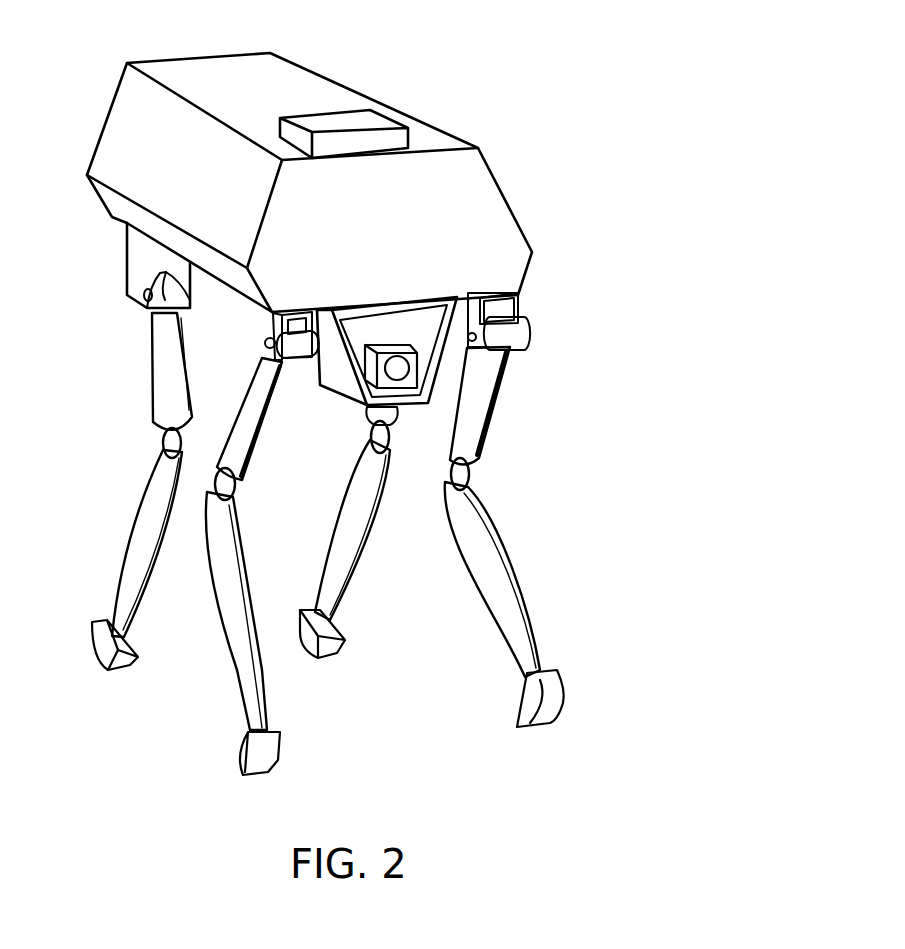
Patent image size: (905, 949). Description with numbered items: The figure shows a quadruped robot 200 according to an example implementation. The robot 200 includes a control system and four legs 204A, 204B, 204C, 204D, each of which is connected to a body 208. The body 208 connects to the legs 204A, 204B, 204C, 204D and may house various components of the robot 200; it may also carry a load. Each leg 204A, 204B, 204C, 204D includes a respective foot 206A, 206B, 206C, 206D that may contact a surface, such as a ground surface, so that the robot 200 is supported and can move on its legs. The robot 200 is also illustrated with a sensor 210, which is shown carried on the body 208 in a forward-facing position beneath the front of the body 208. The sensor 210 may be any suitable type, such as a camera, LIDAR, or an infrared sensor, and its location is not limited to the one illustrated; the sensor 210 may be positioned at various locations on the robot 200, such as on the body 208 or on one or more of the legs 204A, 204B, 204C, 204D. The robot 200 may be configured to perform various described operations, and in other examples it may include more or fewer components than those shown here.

The quadruped robot 200 is at (437, 62).
The leg 204A is at (133, 448).
The leg 204B is at (288, 712).
The leg 204C is at (357, 613).
The leg 204D is at (523, 572).
The foot 206A is at (120, 670).
The foot 206B is at (282, 757).
The foot 206C is at (343, 633).
The foot 206D is at (563, 707).
The body 208 is at (530, 262).
The sensor 210 is at (370, 340).